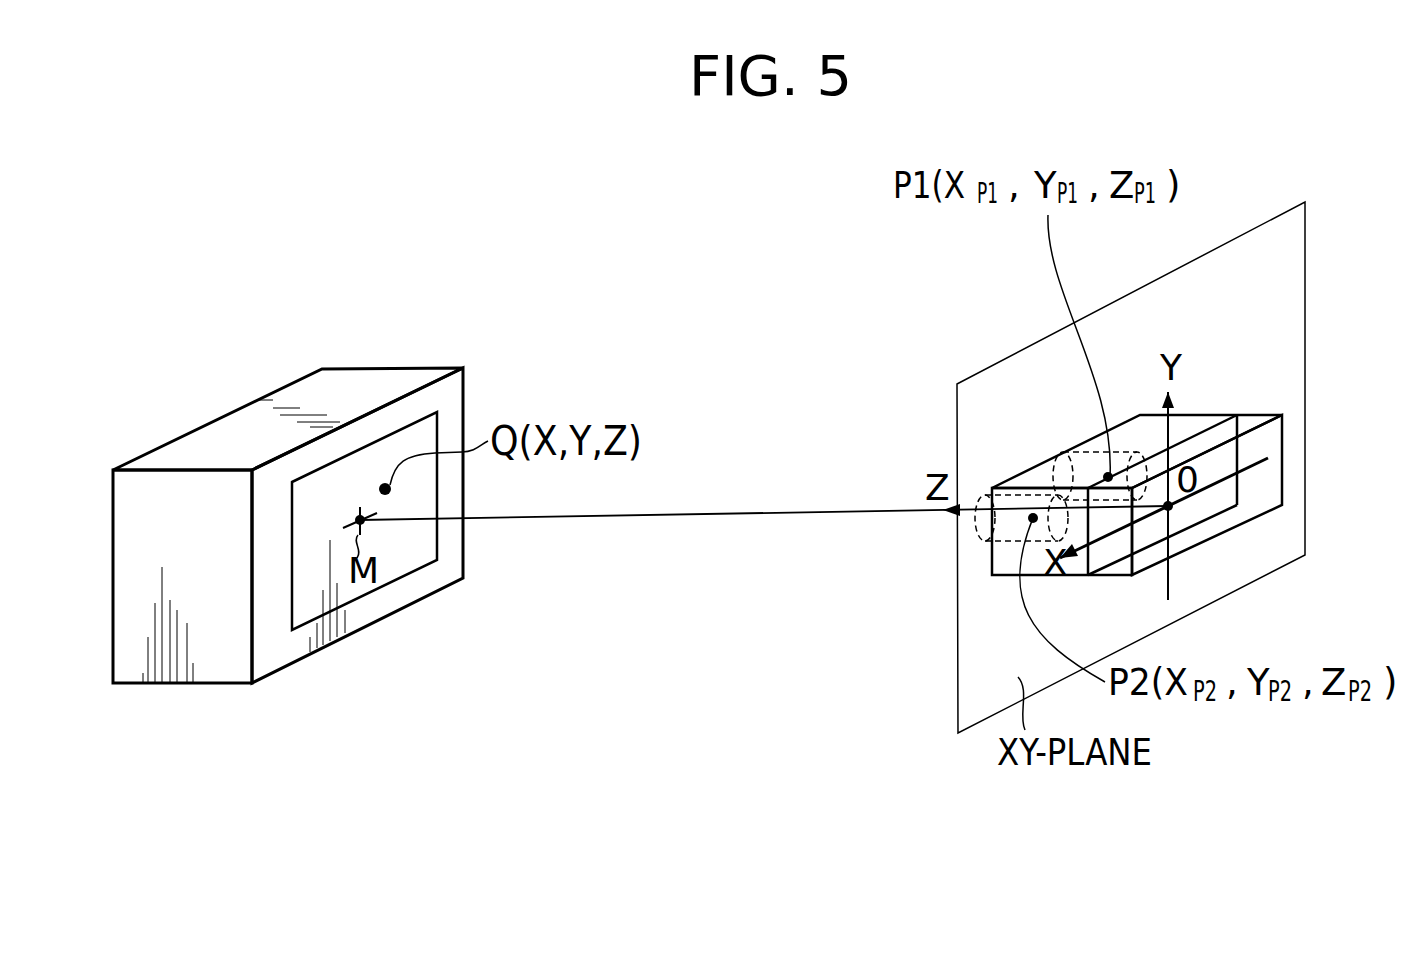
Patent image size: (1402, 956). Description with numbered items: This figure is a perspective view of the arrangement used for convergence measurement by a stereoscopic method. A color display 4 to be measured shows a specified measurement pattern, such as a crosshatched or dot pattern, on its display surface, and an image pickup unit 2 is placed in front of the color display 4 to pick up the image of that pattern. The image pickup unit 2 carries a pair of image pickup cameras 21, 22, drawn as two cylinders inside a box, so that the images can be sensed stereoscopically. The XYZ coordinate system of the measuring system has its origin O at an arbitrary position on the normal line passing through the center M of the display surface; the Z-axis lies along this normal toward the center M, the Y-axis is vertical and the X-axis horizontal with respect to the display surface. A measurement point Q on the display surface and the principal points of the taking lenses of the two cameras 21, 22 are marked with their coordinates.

The image pickup unit 2 is at (1213, 417).
The color display 4 is at (402, 368).
The image pickup camera 21 is at (1043, 467).
The image pickup camera 22 is at (963, 530).